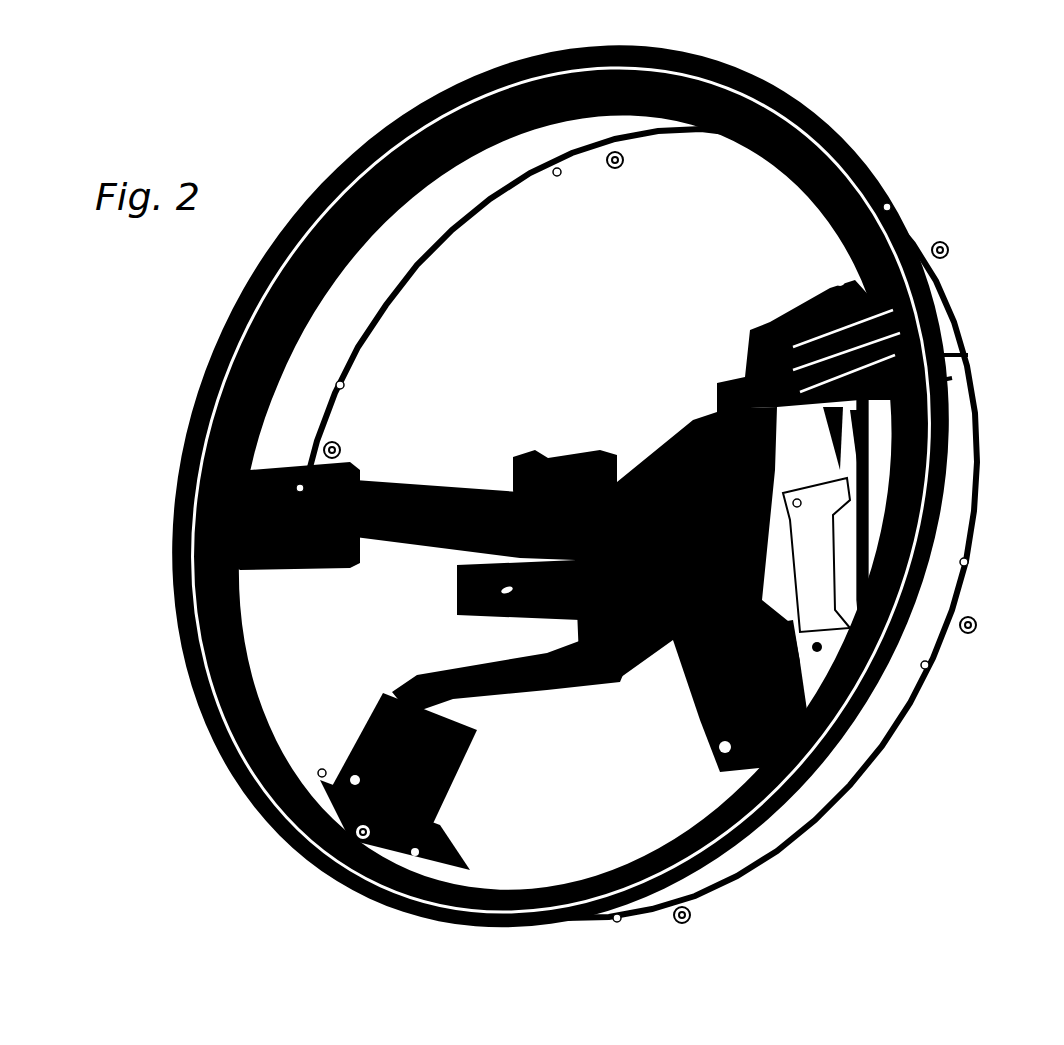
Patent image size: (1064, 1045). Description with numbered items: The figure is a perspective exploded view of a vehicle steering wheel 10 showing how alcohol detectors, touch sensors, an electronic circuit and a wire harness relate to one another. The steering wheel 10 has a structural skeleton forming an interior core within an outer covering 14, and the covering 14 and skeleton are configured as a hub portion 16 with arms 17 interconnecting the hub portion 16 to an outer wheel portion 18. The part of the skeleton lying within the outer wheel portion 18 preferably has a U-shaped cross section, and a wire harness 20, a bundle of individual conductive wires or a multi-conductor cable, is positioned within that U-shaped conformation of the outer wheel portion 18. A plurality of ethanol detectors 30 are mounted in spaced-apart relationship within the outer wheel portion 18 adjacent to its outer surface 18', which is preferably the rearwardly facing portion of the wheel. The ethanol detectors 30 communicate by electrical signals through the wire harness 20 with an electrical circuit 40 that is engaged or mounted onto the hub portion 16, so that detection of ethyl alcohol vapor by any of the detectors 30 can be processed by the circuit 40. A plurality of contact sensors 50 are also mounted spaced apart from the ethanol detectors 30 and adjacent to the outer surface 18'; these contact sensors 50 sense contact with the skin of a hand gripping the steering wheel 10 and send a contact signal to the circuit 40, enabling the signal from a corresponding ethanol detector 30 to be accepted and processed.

The steering wheel 10 is at (730, 66).
The outer covering 14 is at (262, 698).
The hub portion 16 is at (655, 470).
The arms 17 is at (782, 322).
The outer wheel portion 18 is at (560, 516).
The outer surface 18' is at (293, 477).
The wire harness 20 is at (985, 522).
The ethanol detectors 30 is at (620, 172).
The electrical circuit 40 is at (880, 645).
The contact sensors 50 is at (556, 180).